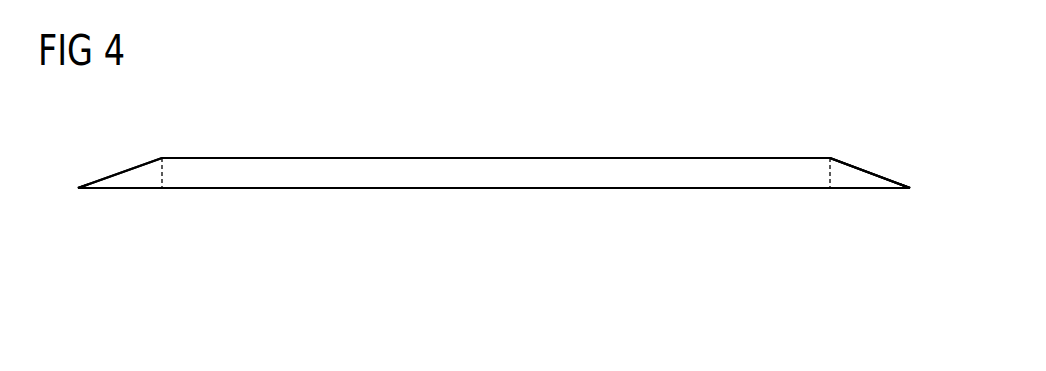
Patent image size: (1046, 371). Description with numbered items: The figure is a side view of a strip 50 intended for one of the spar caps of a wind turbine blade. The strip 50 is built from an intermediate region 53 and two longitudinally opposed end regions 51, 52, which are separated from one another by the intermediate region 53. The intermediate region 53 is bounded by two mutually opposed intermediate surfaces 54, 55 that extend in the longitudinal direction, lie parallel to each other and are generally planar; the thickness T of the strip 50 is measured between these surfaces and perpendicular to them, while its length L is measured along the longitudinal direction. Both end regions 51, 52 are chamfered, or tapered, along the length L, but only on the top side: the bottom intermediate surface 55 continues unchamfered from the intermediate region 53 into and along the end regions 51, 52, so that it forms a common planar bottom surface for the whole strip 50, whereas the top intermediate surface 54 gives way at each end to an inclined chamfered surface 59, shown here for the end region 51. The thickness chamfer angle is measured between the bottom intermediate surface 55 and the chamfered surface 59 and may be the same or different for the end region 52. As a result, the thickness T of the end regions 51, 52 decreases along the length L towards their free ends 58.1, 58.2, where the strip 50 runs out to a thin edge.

The strip 50 is at (648, 178).
The chamfered end region 51 is at (845, 170).
The chamfered end region 52 is at (126, 171).
The intermediate region 53 is at (520, 175).
The top intermediate surface 54 is at (432, 158).
The bottom intermediate surface 55 is at (455, 188).
The free end 58.1 is at (897, 177).
The free end 58.2 is at (78, 186).
The chamfered surface 59 is at (868, 170).
The thickness T is at (183, 130).
The length L is at (910, 270).